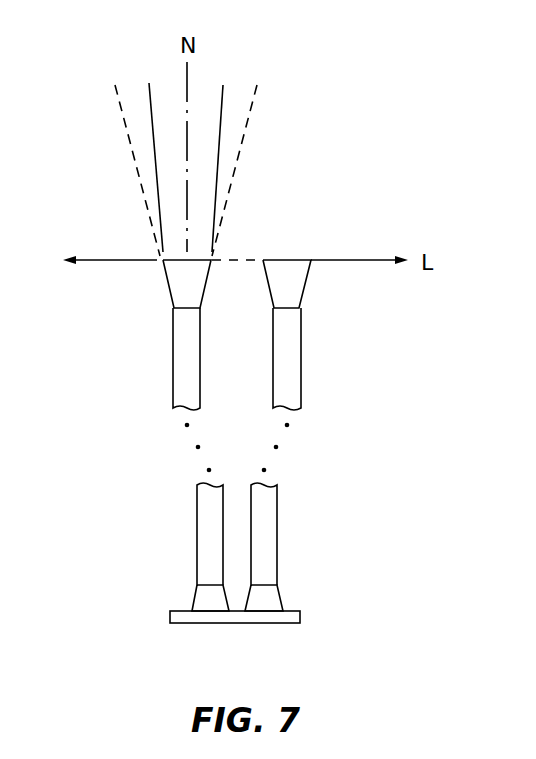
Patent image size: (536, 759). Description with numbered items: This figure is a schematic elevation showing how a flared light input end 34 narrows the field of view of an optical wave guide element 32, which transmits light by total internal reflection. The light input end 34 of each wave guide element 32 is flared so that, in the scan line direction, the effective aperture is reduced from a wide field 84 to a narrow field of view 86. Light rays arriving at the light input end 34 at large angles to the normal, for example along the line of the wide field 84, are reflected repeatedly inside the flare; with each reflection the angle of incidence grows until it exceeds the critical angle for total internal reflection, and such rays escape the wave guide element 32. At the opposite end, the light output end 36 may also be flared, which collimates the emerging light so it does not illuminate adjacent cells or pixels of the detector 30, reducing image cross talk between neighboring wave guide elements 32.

The detector 30 is at (300, 614).
The wave guide element 32 is at (162, 358).
The light input end 34 is at (163, 270).
The light output end 36 is at (193, 598).
The wide field 84 is at (252, 107).
The narrow field of view 86 is at (223, 92).